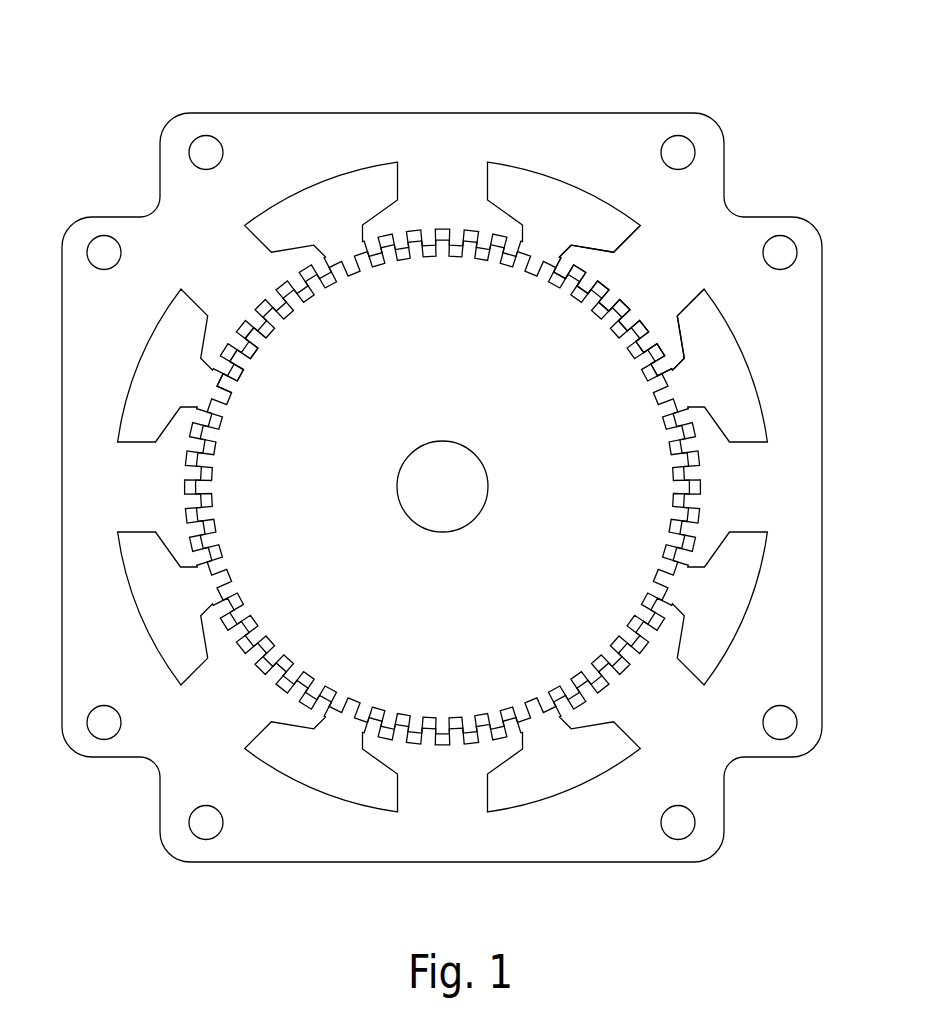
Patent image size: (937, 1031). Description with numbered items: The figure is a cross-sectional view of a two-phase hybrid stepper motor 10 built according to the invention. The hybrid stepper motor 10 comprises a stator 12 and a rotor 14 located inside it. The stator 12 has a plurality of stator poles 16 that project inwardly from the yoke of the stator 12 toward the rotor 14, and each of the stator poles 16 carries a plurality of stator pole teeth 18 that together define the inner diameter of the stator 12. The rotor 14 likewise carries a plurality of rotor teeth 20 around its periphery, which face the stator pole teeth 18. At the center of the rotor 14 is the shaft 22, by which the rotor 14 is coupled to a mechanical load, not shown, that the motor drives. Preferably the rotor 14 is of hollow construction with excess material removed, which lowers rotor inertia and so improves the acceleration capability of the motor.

The hybrid stepper motor 10 is at (168, 72).
The stator 12 is at (510, 116).
The rotor 14 is at (567, 617).
The stator poles 16 is at (695, 248).
The stator pole teeth 18 is at (668, 366).
The rotor teeth 20 is at (225, 352).
The shaft 22 is at (453, 512).